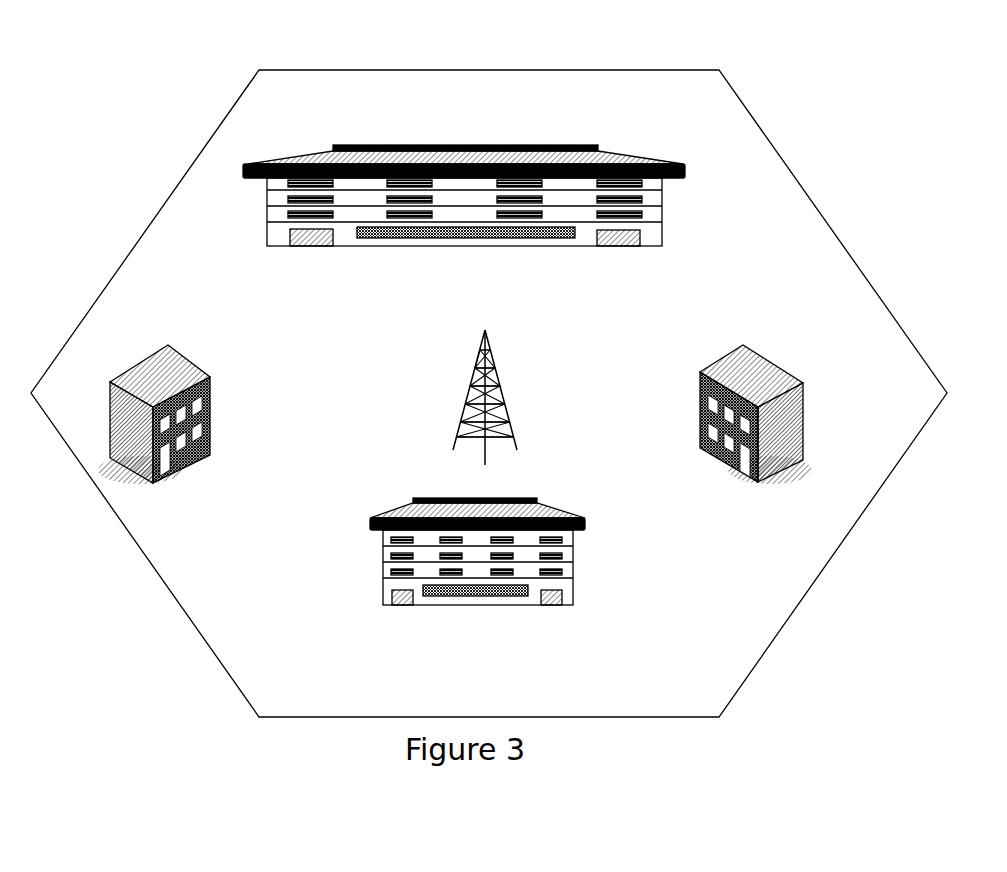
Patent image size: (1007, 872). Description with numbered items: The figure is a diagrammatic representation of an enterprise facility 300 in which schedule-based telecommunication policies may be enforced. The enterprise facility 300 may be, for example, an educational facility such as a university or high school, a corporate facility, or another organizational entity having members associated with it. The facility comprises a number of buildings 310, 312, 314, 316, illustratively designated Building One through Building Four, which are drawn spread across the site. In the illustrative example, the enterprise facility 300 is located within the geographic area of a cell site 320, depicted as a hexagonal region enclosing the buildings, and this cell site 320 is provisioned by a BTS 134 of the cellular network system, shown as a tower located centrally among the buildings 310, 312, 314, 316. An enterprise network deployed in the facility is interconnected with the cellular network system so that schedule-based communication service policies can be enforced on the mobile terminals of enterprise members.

The enterprise facility 300 is at (410, 40).
The cell site 320 is at (787, 164).
The building 310 is at (660, 160).
The building 312 is at (540, 500).
The building 314 is at (190, 362).
The building 316 is at (785, 372).
The BTS 134 is at (495, 400).